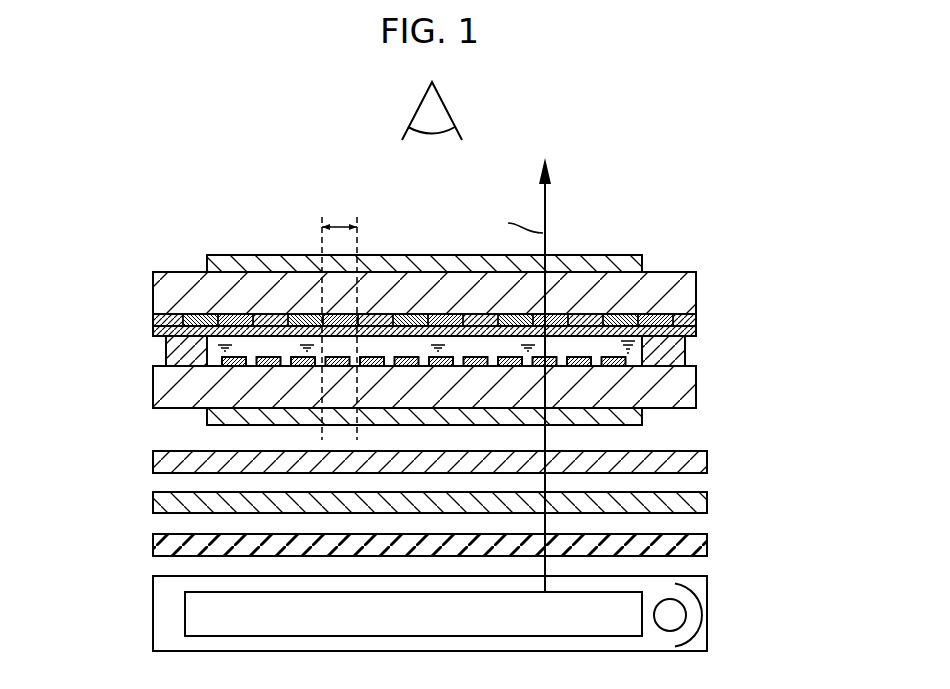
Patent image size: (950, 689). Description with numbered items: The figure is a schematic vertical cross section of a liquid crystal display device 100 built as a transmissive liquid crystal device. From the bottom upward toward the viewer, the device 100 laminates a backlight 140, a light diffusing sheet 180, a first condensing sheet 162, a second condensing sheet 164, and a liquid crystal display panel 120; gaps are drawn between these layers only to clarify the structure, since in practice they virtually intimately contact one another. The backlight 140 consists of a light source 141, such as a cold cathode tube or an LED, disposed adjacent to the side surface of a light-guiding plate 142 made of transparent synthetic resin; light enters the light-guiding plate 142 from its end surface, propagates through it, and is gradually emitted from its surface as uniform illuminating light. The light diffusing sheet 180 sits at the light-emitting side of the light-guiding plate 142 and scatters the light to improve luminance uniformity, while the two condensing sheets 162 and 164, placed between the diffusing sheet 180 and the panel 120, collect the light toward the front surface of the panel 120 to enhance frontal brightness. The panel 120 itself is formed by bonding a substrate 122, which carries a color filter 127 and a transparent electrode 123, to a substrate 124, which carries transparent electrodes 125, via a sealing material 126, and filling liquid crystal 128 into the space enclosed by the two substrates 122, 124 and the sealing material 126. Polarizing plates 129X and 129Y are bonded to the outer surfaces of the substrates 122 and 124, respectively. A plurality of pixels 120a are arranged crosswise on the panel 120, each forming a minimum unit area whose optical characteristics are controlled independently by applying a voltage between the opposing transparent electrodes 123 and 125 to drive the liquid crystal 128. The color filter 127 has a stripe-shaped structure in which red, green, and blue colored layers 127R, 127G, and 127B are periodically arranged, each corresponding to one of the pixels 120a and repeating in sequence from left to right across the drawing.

The liquid crystal display device 100 is at (175, 145).
The liquid crystal display panel 120 is at (768, 253).
The pixel 120a is at (344, 315).
The substrate 122 is at (153, 285).
The transparent electrode 123 is at (153, 330).
The substrate 124 is at (153, 400).
The transparent electrodes 125 is at (234, 367).
The sealing material 126 is at (163, 348).
The color filter 127 is at (697, 320).
The colored layer (R) 127R is at (548, 318).
The colored layer (G) 127G is at (578, 318).
The colored layer (B) 127B is at (610, 318).
The liquid crystal 128 is at (217, 350).
The polarizing plate 129X is at (643, 268).
The polarizing plate 129Y is at (643, 418).
The backlight 140 is at (710, 610).
The light source 141 is at (663, 632).
The light-guiding plate 142 is at (185, 606).
The first condensing sheet 162 is at (707, 505).
The second condensing sheet 164 is at (707, 463).
The light diffusing sheet 180 is at (707, 547).